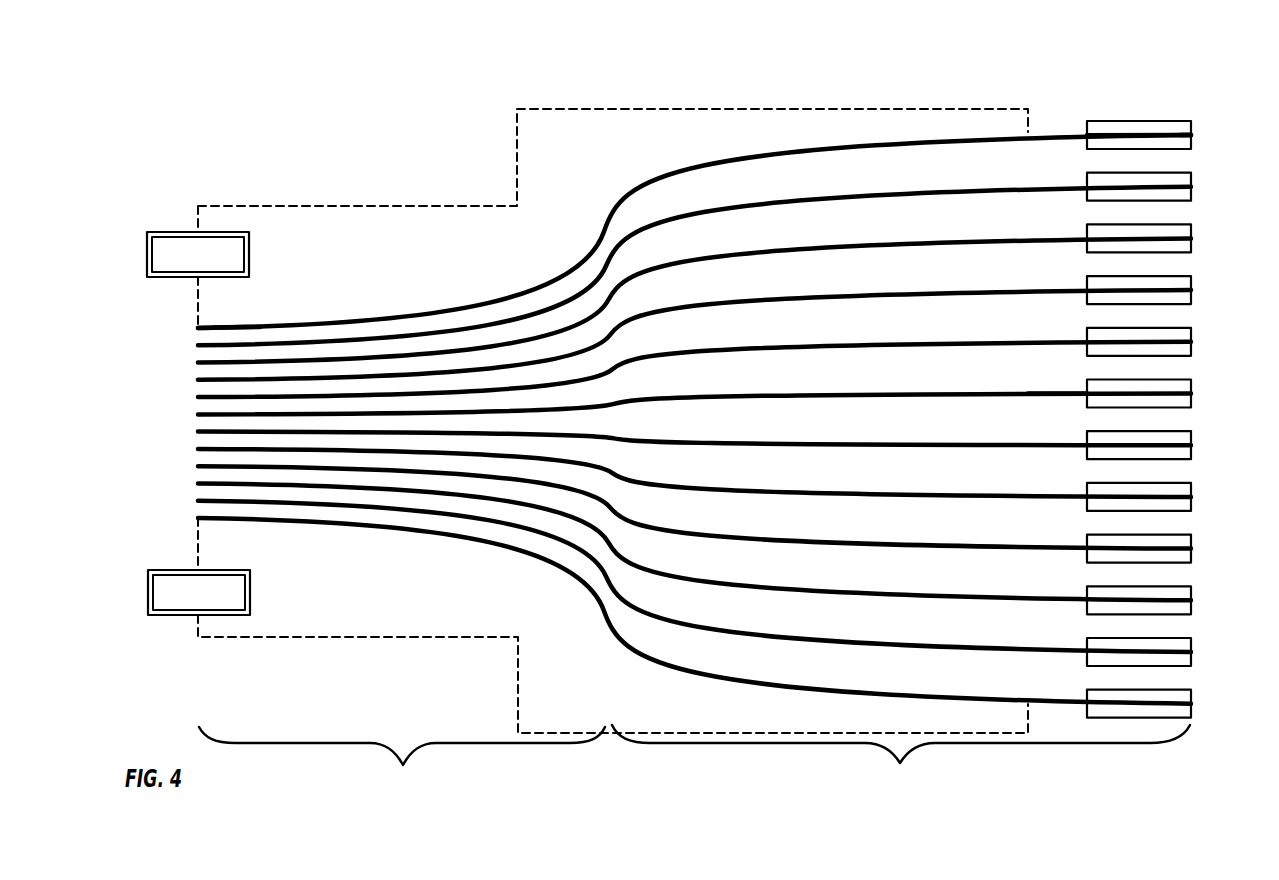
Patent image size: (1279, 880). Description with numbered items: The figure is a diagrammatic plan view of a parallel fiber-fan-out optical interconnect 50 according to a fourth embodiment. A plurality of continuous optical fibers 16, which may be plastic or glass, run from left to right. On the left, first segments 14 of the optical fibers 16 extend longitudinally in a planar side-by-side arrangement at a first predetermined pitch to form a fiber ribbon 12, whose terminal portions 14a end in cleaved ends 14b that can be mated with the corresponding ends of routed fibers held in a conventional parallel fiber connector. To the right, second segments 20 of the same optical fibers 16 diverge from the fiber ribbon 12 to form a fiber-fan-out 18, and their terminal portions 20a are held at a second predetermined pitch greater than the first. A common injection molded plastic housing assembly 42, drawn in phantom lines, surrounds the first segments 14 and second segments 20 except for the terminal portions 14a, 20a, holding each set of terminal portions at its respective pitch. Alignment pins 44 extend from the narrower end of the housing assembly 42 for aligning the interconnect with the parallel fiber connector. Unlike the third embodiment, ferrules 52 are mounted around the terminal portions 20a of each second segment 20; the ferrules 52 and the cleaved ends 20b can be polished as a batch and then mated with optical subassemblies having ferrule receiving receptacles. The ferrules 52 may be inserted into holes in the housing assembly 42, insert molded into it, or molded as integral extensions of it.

The parallel fiber-fan-out optical interconnect 50 is at (225, 82).
The fiber ribbon 12 is at (402, 762).
The first segments 14 is at (318, 301).
The terminal portions 14a is at (235, 326).
The cleaved ends 14b is at (198, 326).
The optical fibers 16 is at (318, 506).
The fiber-fan-out 18 is at (901, 761).
The second segments 20 is at (657, 172).
The terminal portions 20a is at (1128, 132).
The cleaved ends 20b is at (1191, 135).
The housing assembly 42 is at (530, 108).
The alignment pins 44 is at (167, 232).
The ferrules 52 is at (1178, 103).